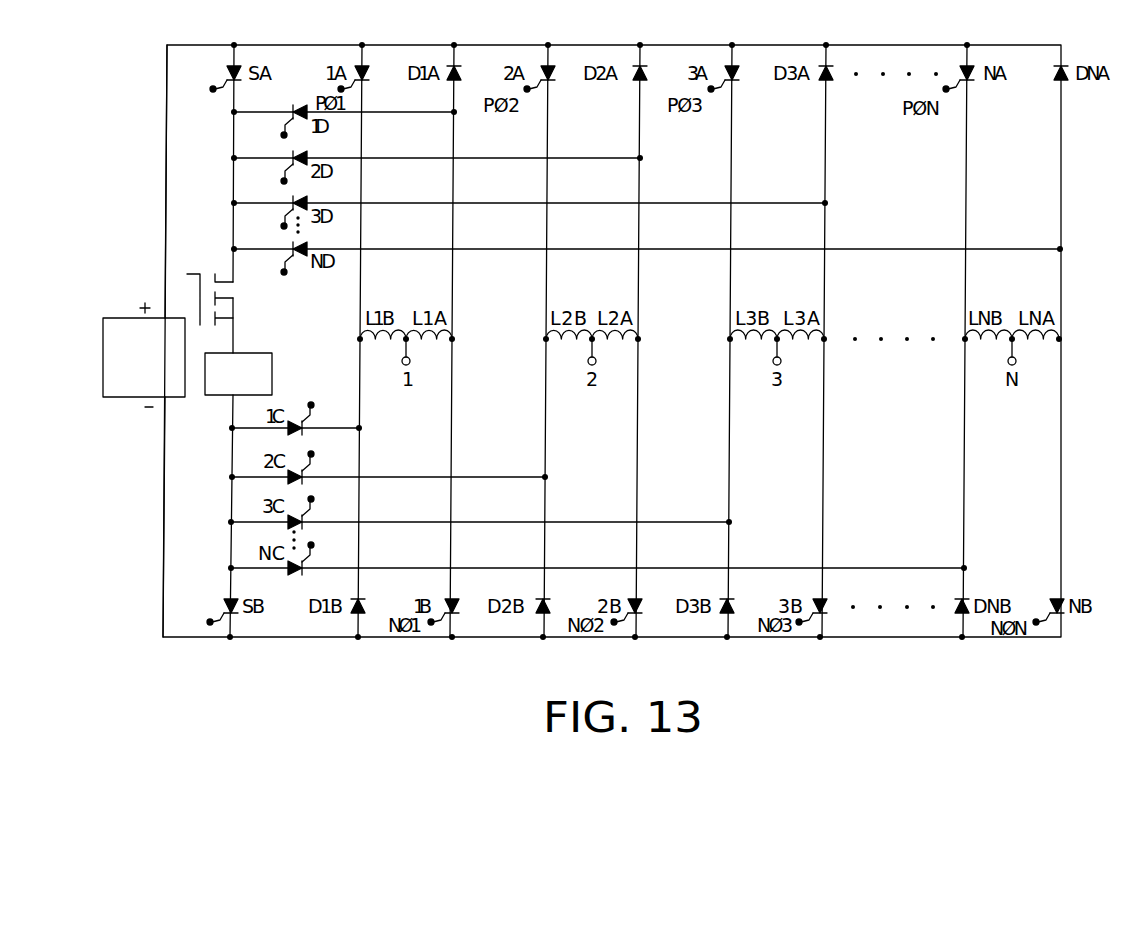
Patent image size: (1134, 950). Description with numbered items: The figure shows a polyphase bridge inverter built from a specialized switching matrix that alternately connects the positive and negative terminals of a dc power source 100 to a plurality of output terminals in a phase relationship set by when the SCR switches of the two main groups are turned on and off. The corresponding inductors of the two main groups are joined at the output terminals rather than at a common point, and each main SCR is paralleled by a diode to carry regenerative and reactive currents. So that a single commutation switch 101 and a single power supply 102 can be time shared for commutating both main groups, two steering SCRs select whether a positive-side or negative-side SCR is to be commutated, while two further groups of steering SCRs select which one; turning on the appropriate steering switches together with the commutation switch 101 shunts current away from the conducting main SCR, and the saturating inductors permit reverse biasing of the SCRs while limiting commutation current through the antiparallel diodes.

The dc power source 100 is at (170, 398).
The commutation switch 101 is at (193, 289).
The commutation power supply 102 is at (273, 364).